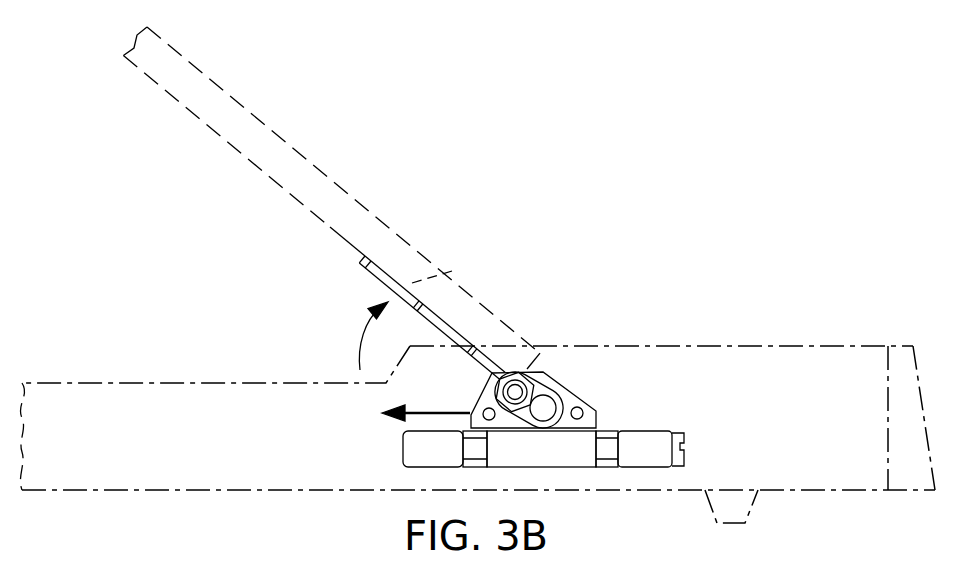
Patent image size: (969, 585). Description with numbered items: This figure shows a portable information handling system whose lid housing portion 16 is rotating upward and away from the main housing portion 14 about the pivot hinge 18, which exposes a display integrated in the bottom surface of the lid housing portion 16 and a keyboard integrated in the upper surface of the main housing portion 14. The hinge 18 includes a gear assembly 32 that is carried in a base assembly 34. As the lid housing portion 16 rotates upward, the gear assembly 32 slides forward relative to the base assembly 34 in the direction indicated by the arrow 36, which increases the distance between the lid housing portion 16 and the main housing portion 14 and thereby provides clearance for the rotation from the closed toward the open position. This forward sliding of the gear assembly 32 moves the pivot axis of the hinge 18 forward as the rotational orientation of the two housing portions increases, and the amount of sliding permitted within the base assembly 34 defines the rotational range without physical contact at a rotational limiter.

The main housing portion 14 is at (158, 491).
The lid housing portion 16 is at (305, 158).
The pivot hinge 18 is at (556, 346).
The gear assembly 32 is at (580, 374).
The base assembly 34 is at (391, 450).
The arrow 36 is at (431, 411).